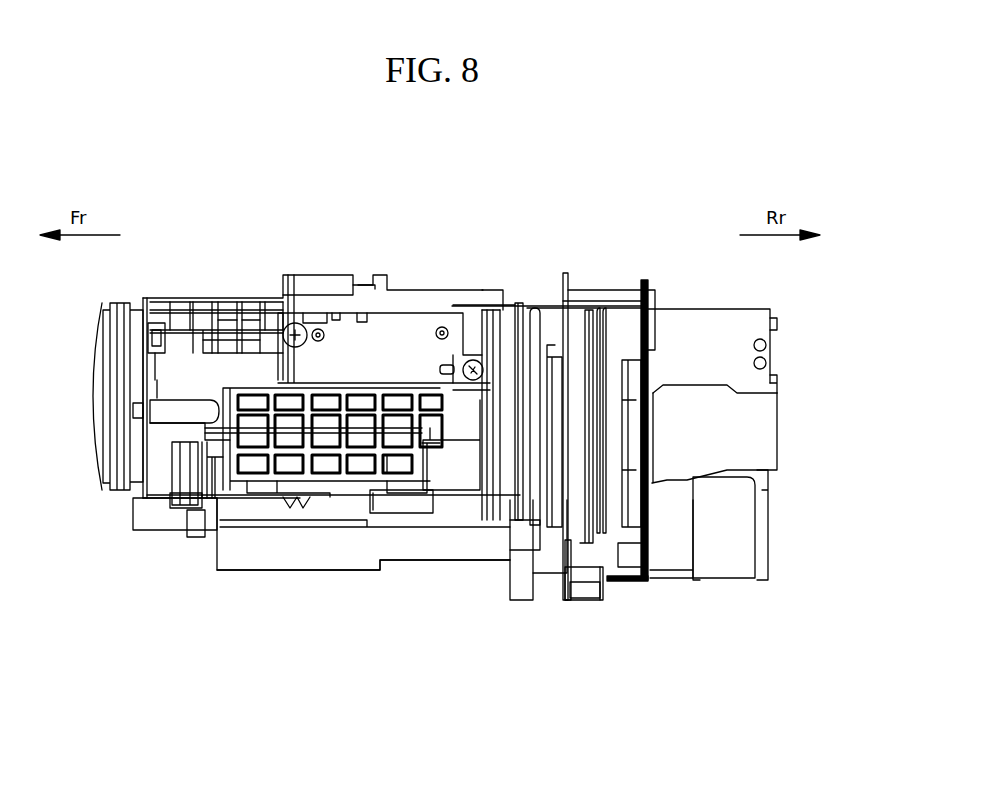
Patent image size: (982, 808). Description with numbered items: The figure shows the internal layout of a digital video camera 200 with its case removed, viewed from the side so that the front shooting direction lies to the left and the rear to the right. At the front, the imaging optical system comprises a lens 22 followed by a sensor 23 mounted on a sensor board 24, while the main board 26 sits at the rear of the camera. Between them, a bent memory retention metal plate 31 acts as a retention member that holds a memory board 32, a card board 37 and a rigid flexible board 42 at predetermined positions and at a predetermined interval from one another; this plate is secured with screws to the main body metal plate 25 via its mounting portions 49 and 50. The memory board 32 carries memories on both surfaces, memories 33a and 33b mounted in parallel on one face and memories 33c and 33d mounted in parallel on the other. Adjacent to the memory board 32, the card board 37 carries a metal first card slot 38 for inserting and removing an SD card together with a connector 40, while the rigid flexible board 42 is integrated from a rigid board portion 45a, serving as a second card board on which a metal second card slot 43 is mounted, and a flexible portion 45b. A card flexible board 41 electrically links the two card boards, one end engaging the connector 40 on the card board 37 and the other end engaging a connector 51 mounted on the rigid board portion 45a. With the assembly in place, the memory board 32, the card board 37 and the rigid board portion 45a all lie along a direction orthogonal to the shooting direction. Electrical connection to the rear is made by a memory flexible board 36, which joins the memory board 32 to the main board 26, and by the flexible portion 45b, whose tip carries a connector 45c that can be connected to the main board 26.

The digital video camera 200 is at (644, 210).
The lens 22 is at (97, 350).
The sensor 23 is at (497, 377).
The sensor board 24 is at (518, 450).
The main body metal plate 25 is at (530, 598).
The main board 26 is at (738, 310).
The memory retention metal plate 31 is at (590, 590).
The memory board 32 is at (582, 598).
The memory 33a is at (588, 312).
The memory 33b is at (562, 575).
The memory 33c is at (607, 332).
The memory 33d is at (607, 525).
The memory flexible board 36 is at (774, 427).
The card board 37 is at (558, 532).
The first card slot 38 is at (515, 540).
The connector 40 is at (558, 322).
The card flexible board 41 is at (611, 289).
The rigid flexible board 42 is at (652, 407).
The second card slot 43 is at (646, 367).
The rigid board portion 45a is at (645, 378).
The flexible portion 45b is at (676, 557).
The connector 45c is at (733, 510).
The mounting portion 49 is at (575, 595).
The mounting portion 50 is at (548, 325).
The connector 51 is at (653, 340).